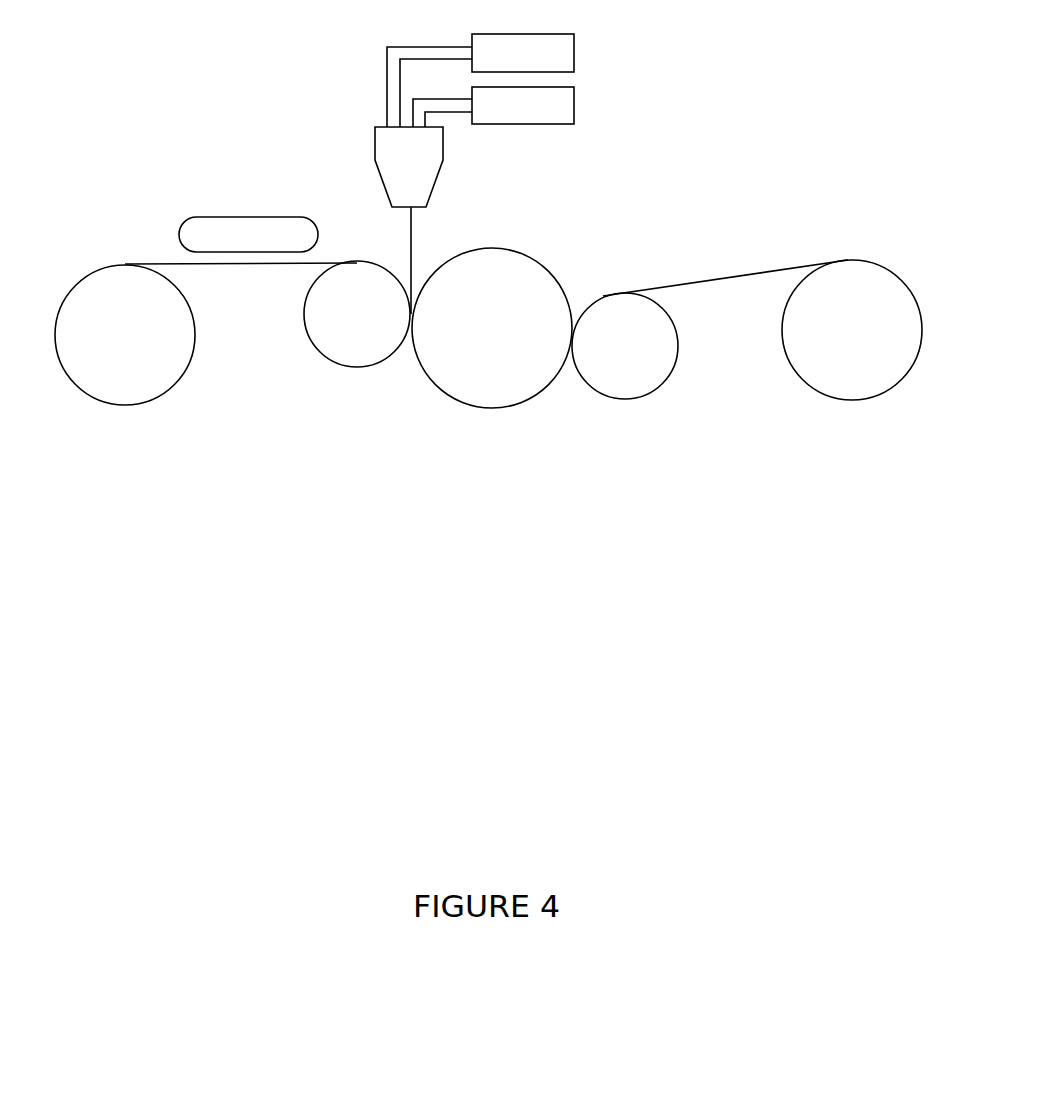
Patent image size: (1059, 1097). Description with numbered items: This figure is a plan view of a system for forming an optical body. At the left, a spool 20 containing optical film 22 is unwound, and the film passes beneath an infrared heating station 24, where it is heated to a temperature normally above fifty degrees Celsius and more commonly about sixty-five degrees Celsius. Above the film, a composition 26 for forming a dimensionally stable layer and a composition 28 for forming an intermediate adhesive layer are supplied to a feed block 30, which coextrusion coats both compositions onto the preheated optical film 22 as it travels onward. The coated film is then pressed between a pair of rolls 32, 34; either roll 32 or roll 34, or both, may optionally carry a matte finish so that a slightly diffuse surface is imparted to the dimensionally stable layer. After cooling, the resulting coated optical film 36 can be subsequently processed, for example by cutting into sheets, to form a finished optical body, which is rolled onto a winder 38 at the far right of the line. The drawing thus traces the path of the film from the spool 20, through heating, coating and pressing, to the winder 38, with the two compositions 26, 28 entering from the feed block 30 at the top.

The spool 20 is at (126, 348).
The optical film 22 is at (202, 264).
The infrared heating station 24 is at (199, 230).
The composition for forming a dimensionally stable layer 26 is at (567, 107).
The composition for forming an intermediate adhesive layer 28 is at (567, 52).
The feed block 30 is at (413, 165).
The roll 32 is at (328, 324).
The roll 34 is at (505, 278).
The coated optical film 36 is at (717, 280).
The winder 38 is at (862, 289).